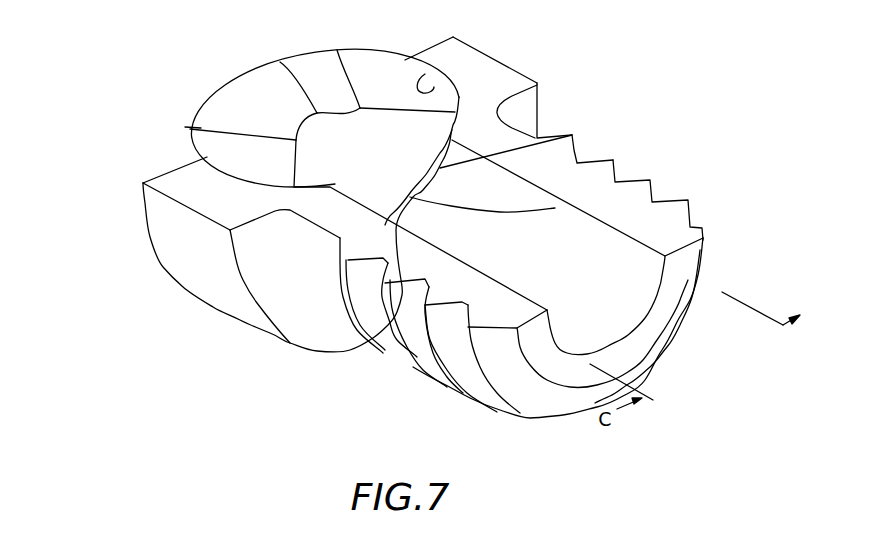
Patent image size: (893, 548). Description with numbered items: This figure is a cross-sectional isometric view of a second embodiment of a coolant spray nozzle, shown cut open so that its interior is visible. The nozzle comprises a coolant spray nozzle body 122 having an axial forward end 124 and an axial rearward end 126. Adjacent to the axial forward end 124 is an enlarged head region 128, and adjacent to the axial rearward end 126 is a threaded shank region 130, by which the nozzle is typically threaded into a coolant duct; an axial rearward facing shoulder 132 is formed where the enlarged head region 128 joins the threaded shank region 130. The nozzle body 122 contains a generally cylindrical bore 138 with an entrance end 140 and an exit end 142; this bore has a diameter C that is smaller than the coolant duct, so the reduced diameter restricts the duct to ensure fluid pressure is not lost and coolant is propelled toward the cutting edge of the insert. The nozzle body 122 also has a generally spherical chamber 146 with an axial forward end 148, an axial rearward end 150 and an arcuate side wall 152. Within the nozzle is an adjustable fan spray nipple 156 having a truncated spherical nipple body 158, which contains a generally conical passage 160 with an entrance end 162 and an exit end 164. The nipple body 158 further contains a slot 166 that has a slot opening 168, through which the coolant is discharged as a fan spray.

The coolant spray nozzle body 122 is at (177, 247).
The axial forward end 124 is at (150, 182).
The axial rearward end 126 is at (680, 263).
The enlarged head region 128 is at (515, 72).
The threaded shank region 130 is at (613, 160).
The axial rearward facing shoulder 132 is at (518, 108).
The generally cylindrical bore 138 is at (628, 290).
The entrance end 140 is at (620, 353).
The exit end 142 is at (430, 272).
The generally spherical chamber 146 is at (160, 190).
The axial forward end 148 is at (405, 58).
The axial rearward end 150 is at (572, 135).
The arcuate side wall 152 is at (425, 74).
The adjustable fan spray nipple 156 is at (187, 128).
The truncated spherical nipple body 158 is at (347, 57).
The generally conical passage 160 is at (363, 163).
The entrance end 162 is at (540, 208).
The exit end 164 is at (280, 64).
The slot 166 is at (200, 108).
The slot opening 168 is at (208, 110).